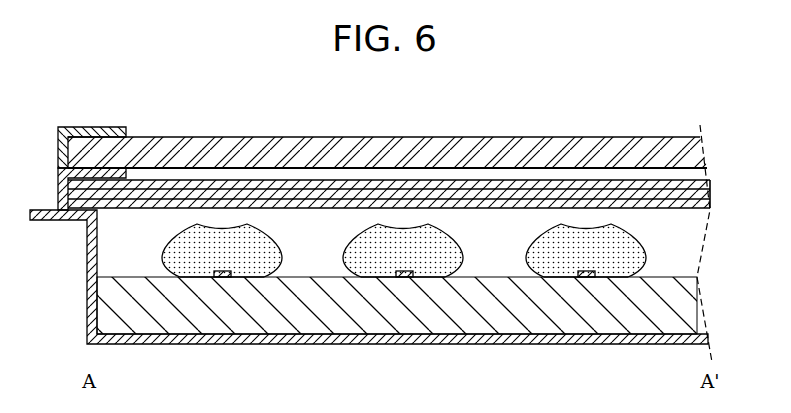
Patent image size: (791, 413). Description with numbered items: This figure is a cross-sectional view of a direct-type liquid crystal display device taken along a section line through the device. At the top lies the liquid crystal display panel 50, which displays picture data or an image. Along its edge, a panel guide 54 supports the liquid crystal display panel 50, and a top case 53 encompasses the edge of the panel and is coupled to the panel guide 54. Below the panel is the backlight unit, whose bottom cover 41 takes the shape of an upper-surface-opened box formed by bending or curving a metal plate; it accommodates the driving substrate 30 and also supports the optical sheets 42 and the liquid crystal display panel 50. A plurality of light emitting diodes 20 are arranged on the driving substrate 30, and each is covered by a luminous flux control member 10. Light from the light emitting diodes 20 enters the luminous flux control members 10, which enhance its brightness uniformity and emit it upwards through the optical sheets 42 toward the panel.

The luminous flux control member 10 is at (480, 282).
The light emitting diode 20 is at (404, 280).
The driving substrate 30 is at (258, 322).
The bottom cover 41 is at (604, 338).
The optical sheets 42 is at (532, 185).
The liquid crystal display panel 50 is at (286, 148).
The top case 53 is at (64, 141).
The panel guide 54 is at (65, 188).